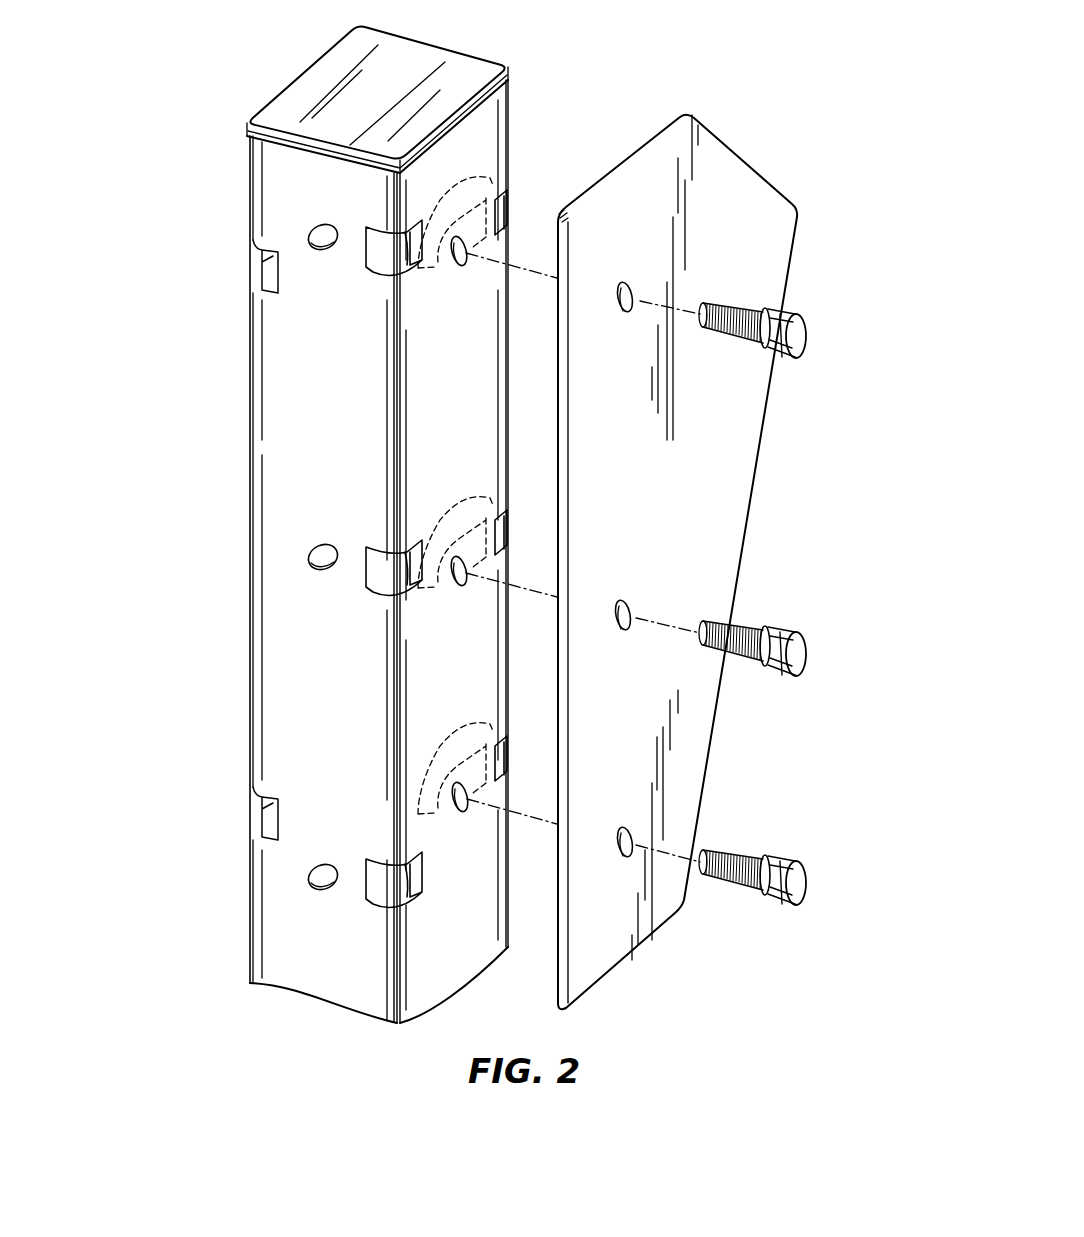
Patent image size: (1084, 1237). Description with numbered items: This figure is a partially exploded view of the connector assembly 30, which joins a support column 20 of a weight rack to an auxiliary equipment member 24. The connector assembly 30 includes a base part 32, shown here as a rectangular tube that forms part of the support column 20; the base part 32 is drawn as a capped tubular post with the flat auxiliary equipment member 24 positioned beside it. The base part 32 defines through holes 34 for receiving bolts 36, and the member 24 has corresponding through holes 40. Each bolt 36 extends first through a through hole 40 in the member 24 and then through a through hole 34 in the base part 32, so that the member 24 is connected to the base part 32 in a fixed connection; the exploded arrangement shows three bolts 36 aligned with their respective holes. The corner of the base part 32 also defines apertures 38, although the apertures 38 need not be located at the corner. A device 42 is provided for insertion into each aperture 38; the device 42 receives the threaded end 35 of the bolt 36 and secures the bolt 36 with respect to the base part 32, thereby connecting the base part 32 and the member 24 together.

The support column 20 is at (198, 198).
The auxiliary equipment member 24 is at (748, 185).
The connector assembly 30 is at (767, 70).
The base part 32 is at (275, 424).
The through hole 34 is at (320, 242).
The threaded end 35 is at (735, 340).
The bolt 36 is at (798, 336).
The aperture 38 is at (260, 282).
The through hole 40 is at (631, 289).
The device 42 is at (508, 210).